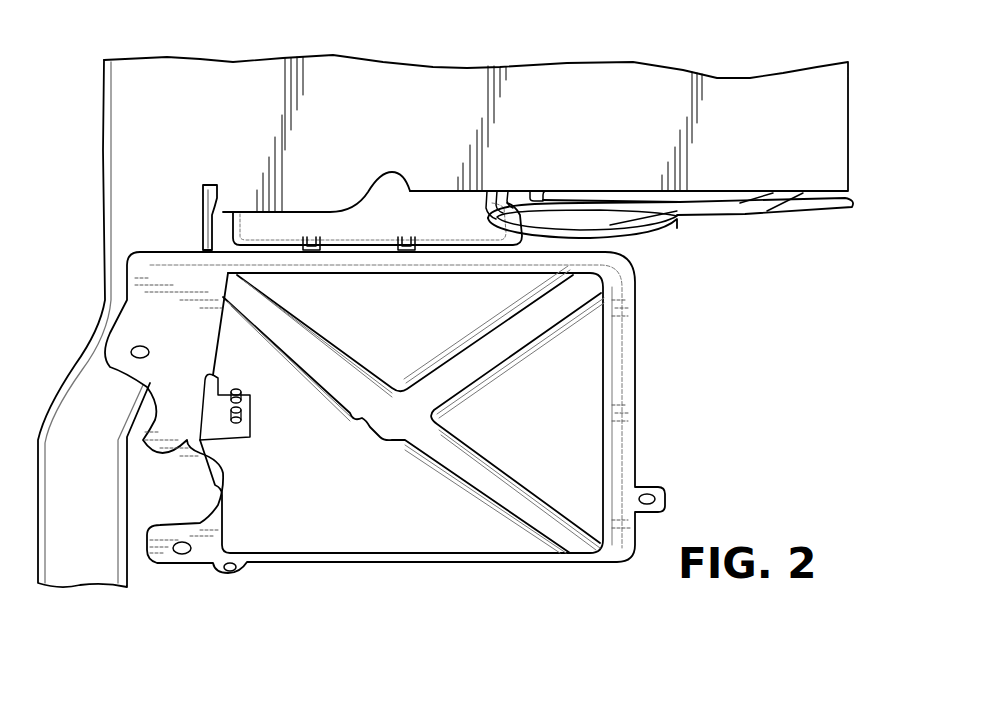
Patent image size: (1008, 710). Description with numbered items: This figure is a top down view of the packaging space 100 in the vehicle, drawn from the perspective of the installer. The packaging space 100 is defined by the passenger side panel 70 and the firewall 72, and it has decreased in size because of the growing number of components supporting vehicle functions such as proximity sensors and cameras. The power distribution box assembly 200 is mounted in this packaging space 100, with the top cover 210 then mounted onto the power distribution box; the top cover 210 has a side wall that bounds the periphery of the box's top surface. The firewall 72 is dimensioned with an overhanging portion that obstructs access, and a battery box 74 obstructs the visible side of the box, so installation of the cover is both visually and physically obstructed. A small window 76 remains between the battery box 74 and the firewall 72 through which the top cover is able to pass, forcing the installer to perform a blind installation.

The passenger side panel 70 is at (137, 230).
The firewall 72 is at (601, 137).
The battery box 74 is at (618, 354).
The small window 76 is at (222, 230).
The packaging space 100 is at (648, 240).
The power distribution box assembly 200 is at (453, 212).
The top cover 210 is at (427, 222).